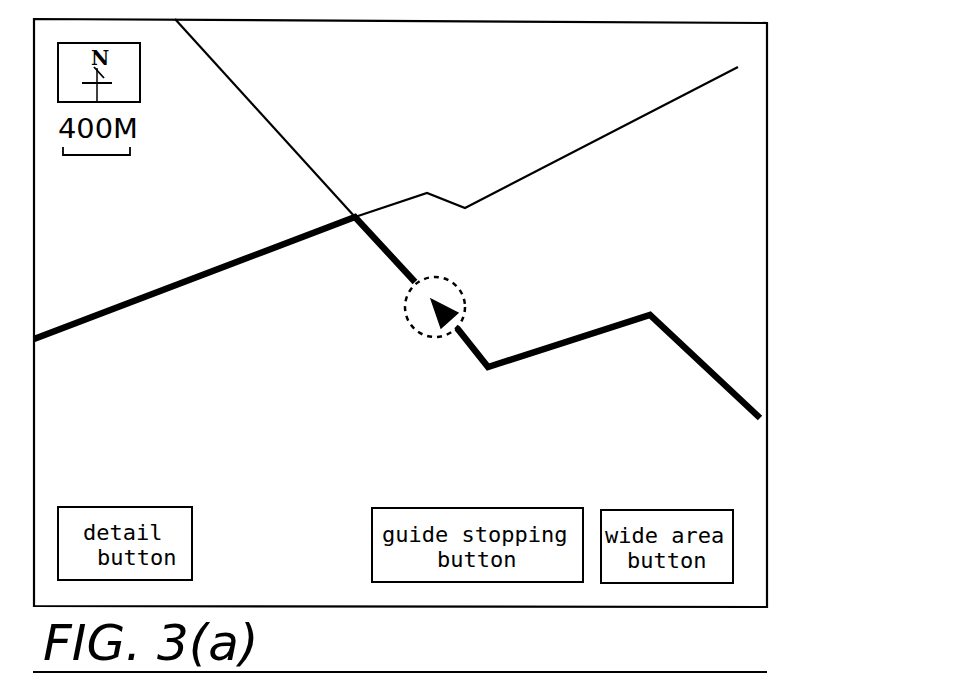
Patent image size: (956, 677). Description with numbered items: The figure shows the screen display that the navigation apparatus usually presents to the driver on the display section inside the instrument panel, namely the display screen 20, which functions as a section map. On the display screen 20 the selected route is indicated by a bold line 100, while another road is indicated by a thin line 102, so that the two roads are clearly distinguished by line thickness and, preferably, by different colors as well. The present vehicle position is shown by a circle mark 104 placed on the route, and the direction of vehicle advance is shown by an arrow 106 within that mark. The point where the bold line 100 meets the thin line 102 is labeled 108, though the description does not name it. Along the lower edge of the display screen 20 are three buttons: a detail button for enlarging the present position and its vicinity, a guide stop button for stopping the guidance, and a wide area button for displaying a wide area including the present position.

The display screen 20 is at (770, 167).
The bold line 100 is at (622, 320).
The thin line 102 is at (412, 192).
The circle mark 104 is at (408, 318).
The arrow 106 is at (460, 289).
The intersection 108 is at (355, 216).